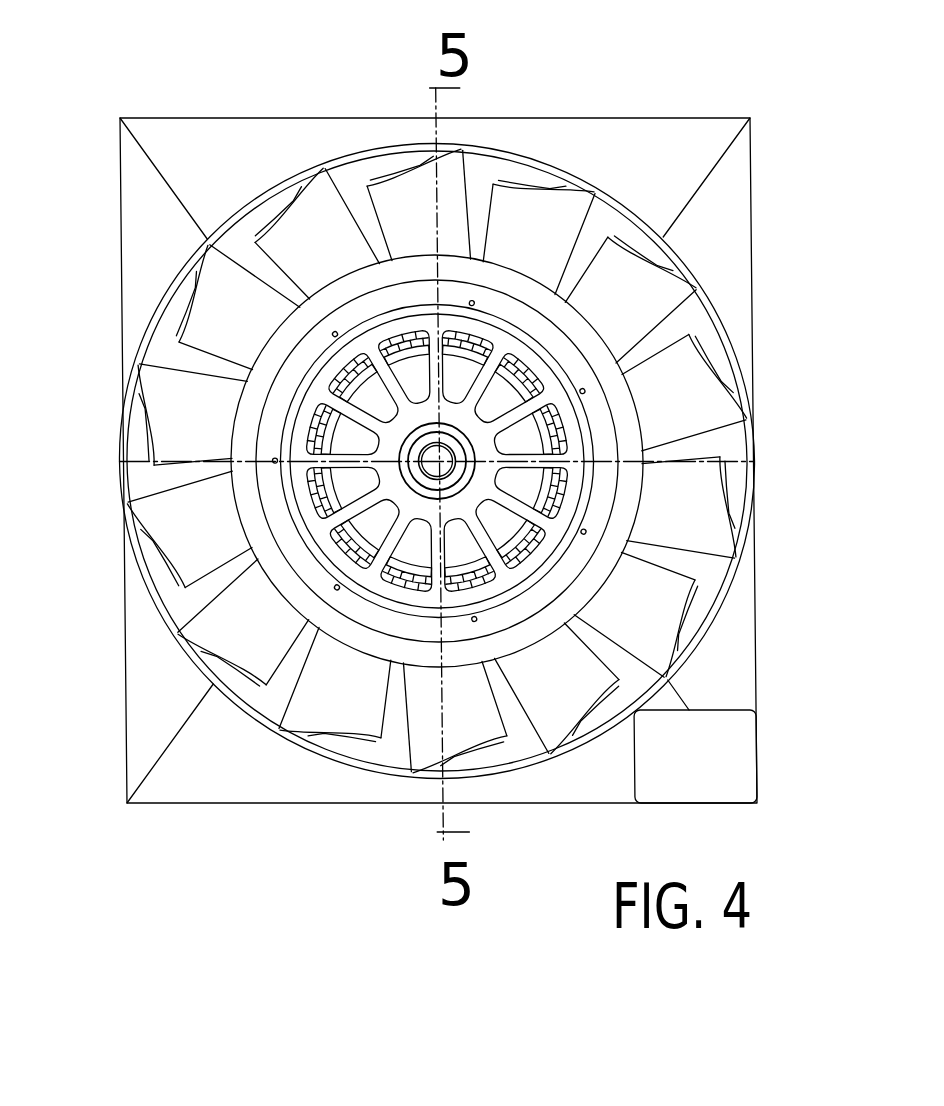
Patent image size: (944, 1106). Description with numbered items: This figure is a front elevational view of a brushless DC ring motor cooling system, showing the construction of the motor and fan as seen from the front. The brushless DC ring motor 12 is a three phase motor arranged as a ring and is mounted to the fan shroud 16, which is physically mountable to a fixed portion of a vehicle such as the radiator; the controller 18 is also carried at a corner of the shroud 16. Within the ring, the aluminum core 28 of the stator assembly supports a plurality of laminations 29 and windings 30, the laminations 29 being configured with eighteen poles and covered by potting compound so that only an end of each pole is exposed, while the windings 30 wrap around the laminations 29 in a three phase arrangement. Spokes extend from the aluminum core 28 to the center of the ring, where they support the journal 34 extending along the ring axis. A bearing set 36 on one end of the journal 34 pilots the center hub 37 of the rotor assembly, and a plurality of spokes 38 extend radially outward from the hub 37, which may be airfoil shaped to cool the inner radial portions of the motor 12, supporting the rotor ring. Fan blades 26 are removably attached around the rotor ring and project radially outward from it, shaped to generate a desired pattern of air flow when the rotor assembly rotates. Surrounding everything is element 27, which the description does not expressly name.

The brushless DC ring motor 12 is at (513, 533).
The fan shroud 16 is at (730, 222).
The controller 18 is at (722, 752).
The fan blades 26 is at (683, 387).
The fan shroud ring 27 is at (598, 350).
The aluminum core 28 is at (330, 502).
The laminations 29 is at (398, 414).
The windings 30 is at (307, 435).
The journal 34 is at (429, 455).
The bearing set 36 is at (420, 445).
The center hub 37 is at (468, 480).
The spokes 38 is at (520, 414).